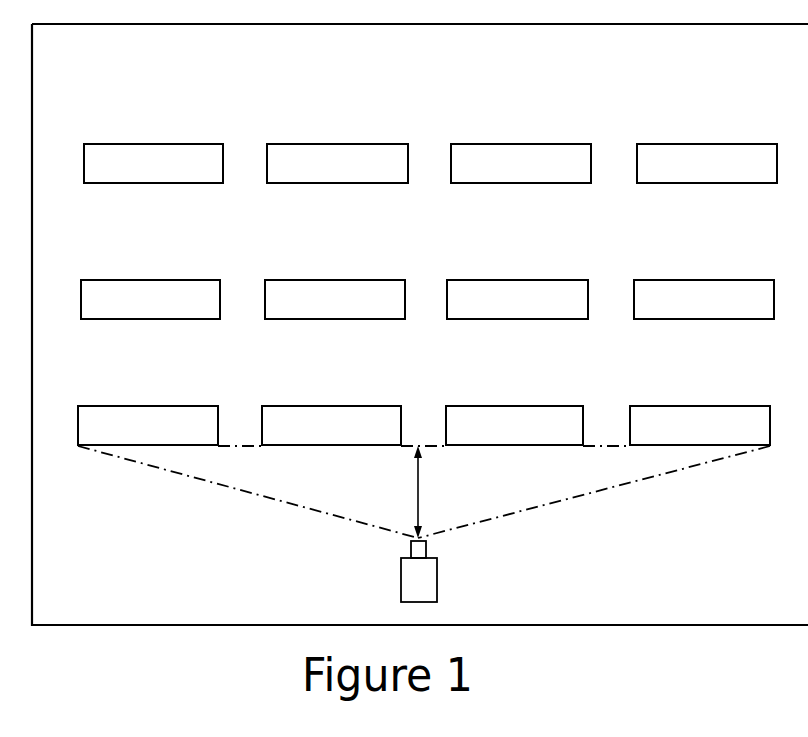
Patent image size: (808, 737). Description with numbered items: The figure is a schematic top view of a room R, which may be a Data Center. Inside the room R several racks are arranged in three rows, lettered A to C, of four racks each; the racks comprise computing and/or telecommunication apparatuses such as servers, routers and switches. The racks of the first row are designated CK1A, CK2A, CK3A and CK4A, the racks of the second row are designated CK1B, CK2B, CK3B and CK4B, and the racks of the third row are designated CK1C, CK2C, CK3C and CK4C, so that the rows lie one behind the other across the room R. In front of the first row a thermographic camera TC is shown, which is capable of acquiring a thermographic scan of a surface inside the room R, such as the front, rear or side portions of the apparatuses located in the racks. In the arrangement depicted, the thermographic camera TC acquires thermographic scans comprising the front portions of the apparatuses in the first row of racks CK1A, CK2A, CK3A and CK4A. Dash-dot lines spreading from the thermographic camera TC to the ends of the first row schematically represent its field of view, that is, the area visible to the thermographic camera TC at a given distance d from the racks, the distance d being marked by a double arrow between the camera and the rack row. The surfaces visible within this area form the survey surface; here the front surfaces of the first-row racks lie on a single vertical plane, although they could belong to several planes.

The room R is at (420, 324).
The rack CK1A is at (148, 425).
The rack CK2A is at (331, 425).
The rack CK3A is at (514, 425).
The rack CK4A is at (700, 425).
The rack CK1B is at (150, 299).
The rack CK2B is at (335, 299).
The rack CK3B is at (517, 299).
The rack CK4B is at (704, 299).
The rack CK1C is at (153, 163).
The rack CK2C is at (337, 163).
The rack CK3C is at (521, 163).
The rack CK4C is at (707, 163).
The thermographic camera TC is at (437, 580).
The distance d is at (427, 492).